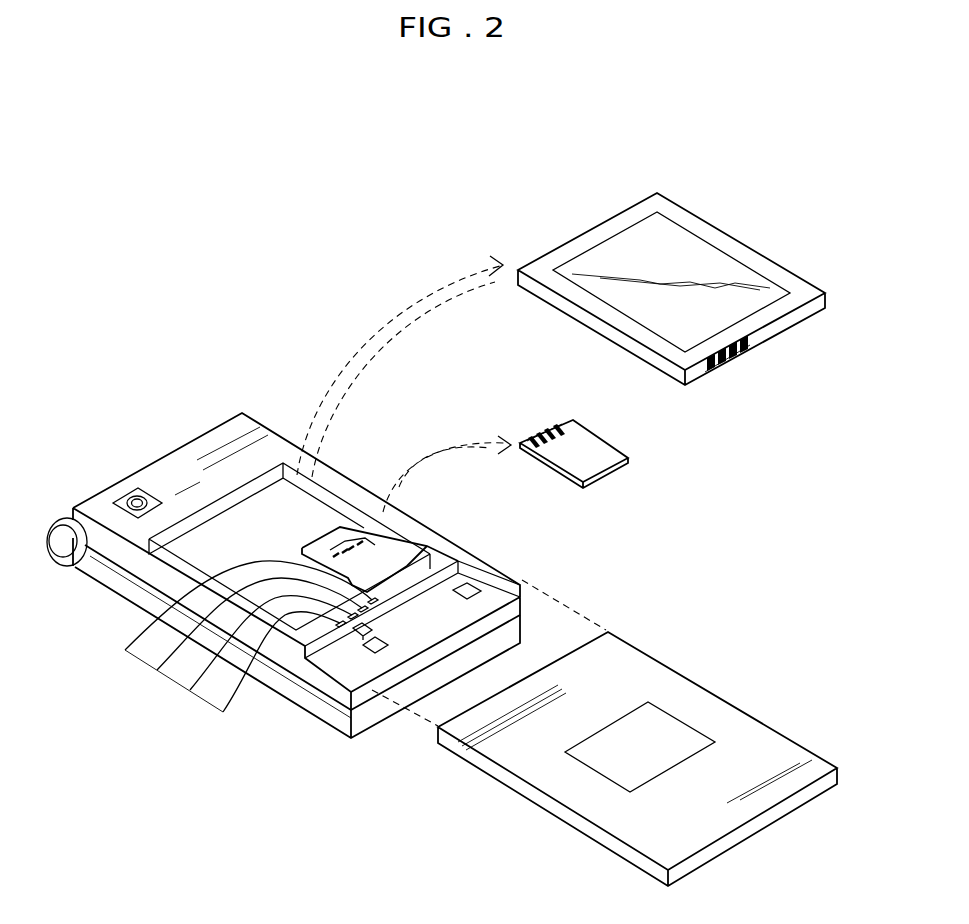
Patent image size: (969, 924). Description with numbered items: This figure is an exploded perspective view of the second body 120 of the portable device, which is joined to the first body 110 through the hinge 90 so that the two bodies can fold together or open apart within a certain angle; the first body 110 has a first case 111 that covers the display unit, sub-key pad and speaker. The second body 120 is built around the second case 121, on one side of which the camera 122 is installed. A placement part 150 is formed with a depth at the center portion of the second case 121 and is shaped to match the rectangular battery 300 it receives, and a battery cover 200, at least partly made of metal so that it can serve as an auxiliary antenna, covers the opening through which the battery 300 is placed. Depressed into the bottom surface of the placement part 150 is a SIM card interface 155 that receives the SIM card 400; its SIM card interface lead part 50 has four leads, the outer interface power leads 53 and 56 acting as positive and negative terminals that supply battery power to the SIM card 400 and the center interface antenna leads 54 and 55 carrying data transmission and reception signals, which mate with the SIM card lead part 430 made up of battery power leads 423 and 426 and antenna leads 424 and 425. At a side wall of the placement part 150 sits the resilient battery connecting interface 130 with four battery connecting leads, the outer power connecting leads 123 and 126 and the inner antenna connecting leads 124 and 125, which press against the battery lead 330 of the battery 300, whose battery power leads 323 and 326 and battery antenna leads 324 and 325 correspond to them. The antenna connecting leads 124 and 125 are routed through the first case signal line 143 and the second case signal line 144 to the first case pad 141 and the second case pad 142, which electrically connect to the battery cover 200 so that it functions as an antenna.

The SIM card interface lead part 50 is at (357, 379).
The interface power lead 53 is at (333, 556).
The interface antenna lead 54 is at (342, 553).
The interface antenna lead 55 is at (348, 550).
The interface power lead 56 is at (357, 545).
The hinge 90 is at (55, 517).
The first body 110 is at (112, 595).
The first case 111 is at (93, 573).
The second body 120 is at (182, 443).
The second case 121 is at (232, 430).
The camera 122 is at (128, 493).
The battery connecting lead 123 is at (223, 712).
The battery connecting lead 124 is at (190, 690).
The battery connecting lead 125 is at (157, 670).
The battery connecting lead 126 is at (125, 650).
The battery connecting interface 130 is at (203, 748).
The first case pad 141 is at (372, 654).
The second case pad 142 is at (468, 583).
The first case signal line 143 is at (348, 642).
The second case signal line 144 is at (527, 640).
The placement part 150 is at (257, 513).
The SIM card interface 155 is at (378, 568).
The battery cover 200 is at (722, 692).
The battery 300 is at (577, 228).
The battery power lead 323 is at (712, 372).
The battery antenna lead 324 is at (723, 365).
The battery antenna lead 325 is at (734, 358).
The battery power lead 326 is at (745, 352).
The battery lead 330 is at (820, 408).
The SIM card 400 is at (608, 476).
The battery power lead 423 is at (527, 440).
The antenna lead 424 is at (536, 436).
The antenna lead 425 is at (551, 433).
The battery power lead 426 is at (560, 428).
The SIM card lead part 430 is at (580, 375).